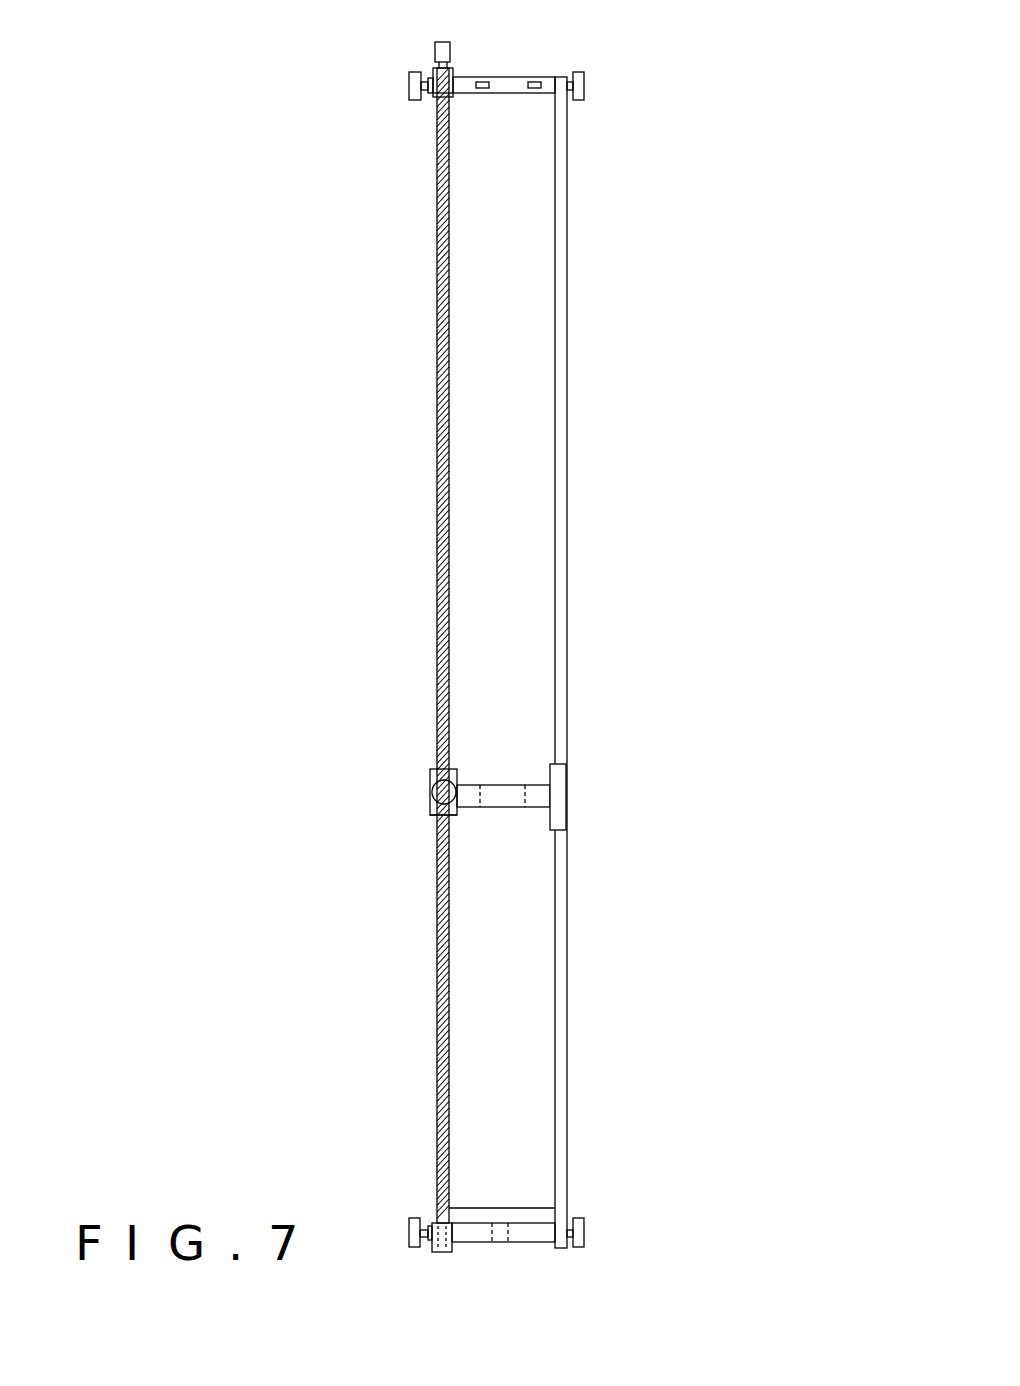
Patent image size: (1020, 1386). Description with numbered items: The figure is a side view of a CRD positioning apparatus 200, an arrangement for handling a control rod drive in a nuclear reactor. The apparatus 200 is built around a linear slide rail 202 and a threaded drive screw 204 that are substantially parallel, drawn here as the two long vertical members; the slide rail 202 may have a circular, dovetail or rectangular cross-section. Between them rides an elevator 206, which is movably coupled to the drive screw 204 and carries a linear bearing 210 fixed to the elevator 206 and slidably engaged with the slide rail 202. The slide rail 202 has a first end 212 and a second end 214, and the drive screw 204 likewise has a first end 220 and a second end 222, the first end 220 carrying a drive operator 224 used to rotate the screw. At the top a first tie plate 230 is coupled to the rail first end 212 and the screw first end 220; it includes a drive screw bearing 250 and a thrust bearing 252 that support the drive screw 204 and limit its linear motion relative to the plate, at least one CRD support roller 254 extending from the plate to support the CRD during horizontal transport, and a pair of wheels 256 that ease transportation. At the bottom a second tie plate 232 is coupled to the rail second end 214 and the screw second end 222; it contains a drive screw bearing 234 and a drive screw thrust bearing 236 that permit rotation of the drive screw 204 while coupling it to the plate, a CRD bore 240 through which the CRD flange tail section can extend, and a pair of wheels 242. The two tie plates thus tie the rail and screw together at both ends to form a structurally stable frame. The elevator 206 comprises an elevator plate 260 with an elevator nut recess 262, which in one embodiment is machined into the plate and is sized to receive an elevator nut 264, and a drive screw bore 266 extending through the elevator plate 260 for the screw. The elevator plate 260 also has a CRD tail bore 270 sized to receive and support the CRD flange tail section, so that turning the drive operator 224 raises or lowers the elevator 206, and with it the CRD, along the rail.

The CRD positioning apparatus 200 is at (600, 658).
The linear slide rail 202 is at (561, 507).
The drive screw 204 is at (437, 505).
The elevator 206 is at (517, 826).
The linear bearing 210 is at (558, 808).
The first end 212 is at (550, 60).
The second end 214 is at (570, 1258).
The first end 220 is at (425, 112).
The second end 222 is at (420, 1205).
The drive operator 224 is at (442, 42).
The first tie plate 230 is at (505, 95).
The second tie plate 232 is at (467, 1233).
The drive screw bearing 234 is at (433, 1242).
The drive screw thrust bearing 236 is at (452, 1247).
The CRD bore 240 is at (502, 1232).
The pair of wheels 242 is at (580, 1225).
The drive screw bearing 250 is at (453, 97).
The thrust bearing 252 is at (435, 70).
The CRD support roller 254 is at (533, 82).
The pair of wheels 256 is at (417, 97).
The elevator plate 260 is at (473, 798).
The elevator nut recess 262 is at (430, 770).
The elevator nut 264 is at (433, 797).
The drive screw bore 266 is at (438, 815).
The CRD tail bore 270 is at (508, 797).